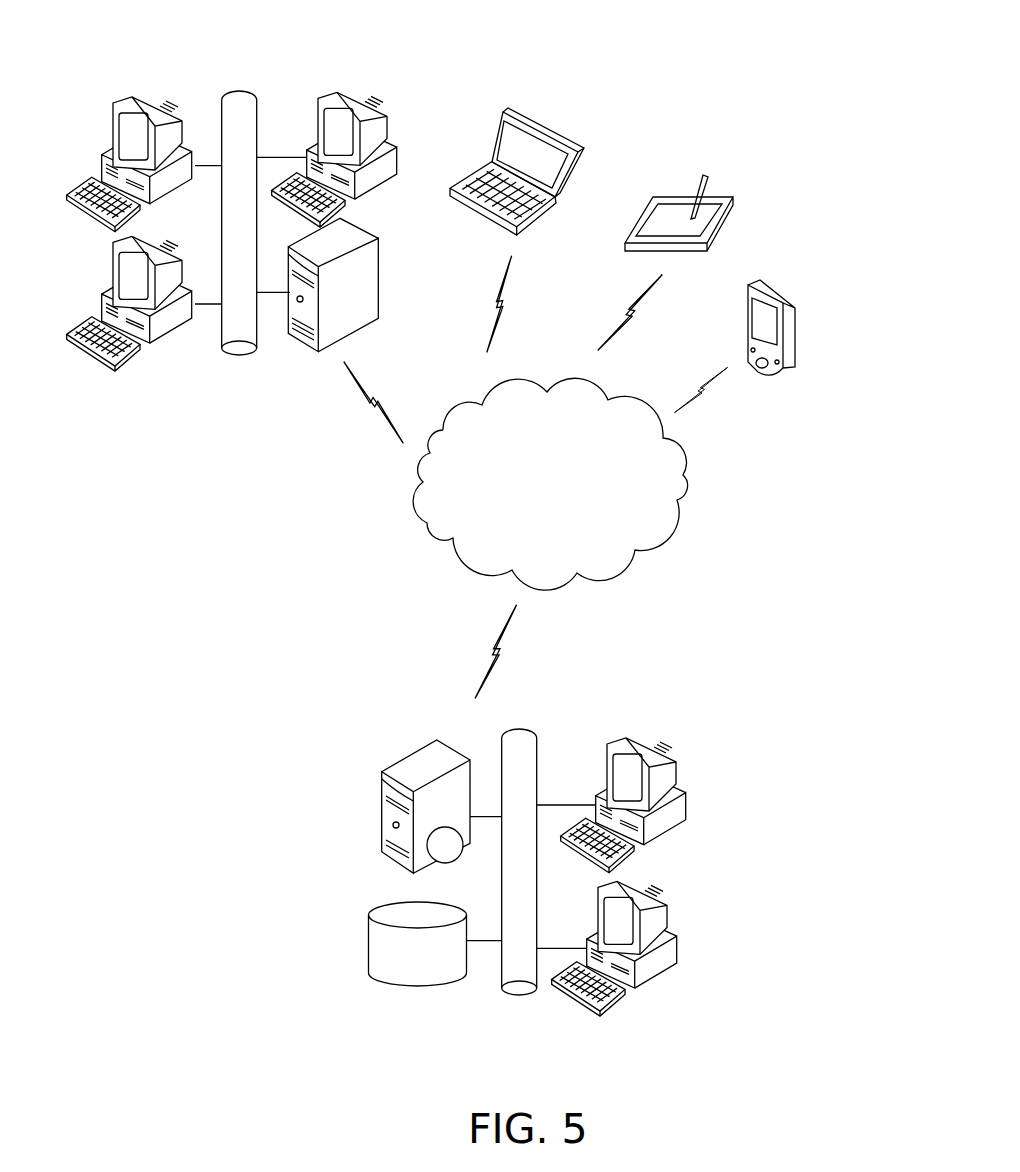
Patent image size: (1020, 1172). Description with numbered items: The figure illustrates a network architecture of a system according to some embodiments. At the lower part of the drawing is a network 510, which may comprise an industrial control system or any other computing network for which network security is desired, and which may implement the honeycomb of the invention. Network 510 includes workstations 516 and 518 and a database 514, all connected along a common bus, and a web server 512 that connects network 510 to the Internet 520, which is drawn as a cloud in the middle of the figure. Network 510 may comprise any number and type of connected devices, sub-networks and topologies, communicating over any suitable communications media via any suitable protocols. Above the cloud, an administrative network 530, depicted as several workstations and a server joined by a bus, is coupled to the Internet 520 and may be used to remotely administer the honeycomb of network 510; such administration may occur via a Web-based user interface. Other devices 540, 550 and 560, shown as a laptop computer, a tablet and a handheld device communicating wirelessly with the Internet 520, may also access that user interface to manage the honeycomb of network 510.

The administrative network 530 is at (721, 63).
The other device 540 is at (537, 126).
The other device 550 is at (724, 197).
The other device 560 is at (777, 295).
The Internet 520 is at (687, 475).
The network 510 is at (688, 741).
The web server 512 is at (381, 813).
The database 514 is at (368, 948).
The workstation 516 is at (690, 810).
The workstation 518 is at (682, 950).